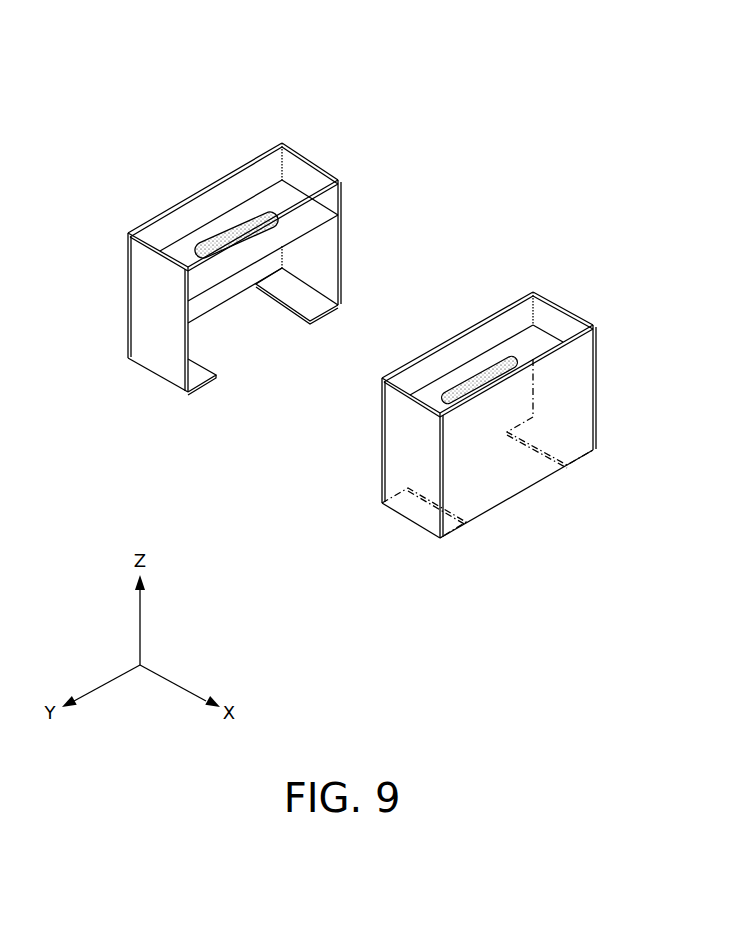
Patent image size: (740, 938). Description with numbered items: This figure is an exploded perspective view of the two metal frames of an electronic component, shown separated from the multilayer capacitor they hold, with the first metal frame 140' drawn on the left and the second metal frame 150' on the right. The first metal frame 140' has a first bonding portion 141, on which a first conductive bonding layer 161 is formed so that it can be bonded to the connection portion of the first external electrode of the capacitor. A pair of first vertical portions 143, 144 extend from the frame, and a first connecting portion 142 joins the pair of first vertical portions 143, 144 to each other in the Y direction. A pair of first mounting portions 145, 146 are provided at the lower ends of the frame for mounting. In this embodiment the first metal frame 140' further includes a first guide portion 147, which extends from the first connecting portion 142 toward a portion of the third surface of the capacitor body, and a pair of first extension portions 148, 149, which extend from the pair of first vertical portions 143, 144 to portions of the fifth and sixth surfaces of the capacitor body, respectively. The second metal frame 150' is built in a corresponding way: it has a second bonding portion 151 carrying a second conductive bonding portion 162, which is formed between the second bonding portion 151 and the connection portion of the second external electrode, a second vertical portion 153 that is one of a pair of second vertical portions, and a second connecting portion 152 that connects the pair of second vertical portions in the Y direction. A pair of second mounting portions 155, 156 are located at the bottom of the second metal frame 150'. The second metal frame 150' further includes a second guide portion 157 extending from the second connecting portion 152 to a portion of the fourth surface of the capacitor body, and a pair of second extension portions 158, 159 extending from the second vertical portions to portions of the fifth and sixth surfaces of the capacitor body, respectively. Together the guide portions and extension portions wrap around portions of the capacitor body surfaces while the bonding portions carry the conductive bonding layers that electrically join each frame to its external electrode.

The first metal frame 140' is at (234, 212).
The first bonding portion 141 is at (213, 230).
The first connecting portion 142 is at (215, 302).
The first vertical portion 143 is at (157, 362).
The first vertical portion 144 is at (320, 255).
The first mounting portion 145 is at (200, 372).
The first mounting portion 146 is at (312, 298).
The first guide portion 147 is at (167, 227).
The first extension portion 148 is at (158, 263).
The first extension portion 149 is at (316, 178).
The second metal frame 150' is at (489, 358).
The second bonding portion 151 is at (510, 357).
The second connecting portion 152 is at (583, 407).
The second vertical portion 153 is at (403, 472).
The second mounting portion 155 is at (467, 527).
The second mounting portion 156 is at (583, 457).
The second guide portion 157 is at (566, 368).
The second extension portion 158 is at (407, 405).
The second extension portion 159 is at (565, 320).
The first conductive bonding layer 161 is at (266, 214).
The second conductive bonding portion 162 is at (470, 383).